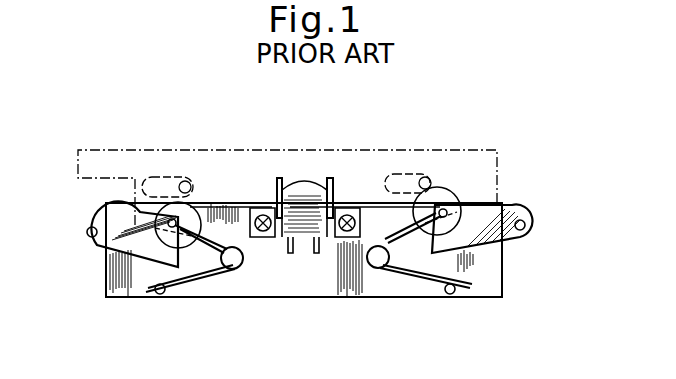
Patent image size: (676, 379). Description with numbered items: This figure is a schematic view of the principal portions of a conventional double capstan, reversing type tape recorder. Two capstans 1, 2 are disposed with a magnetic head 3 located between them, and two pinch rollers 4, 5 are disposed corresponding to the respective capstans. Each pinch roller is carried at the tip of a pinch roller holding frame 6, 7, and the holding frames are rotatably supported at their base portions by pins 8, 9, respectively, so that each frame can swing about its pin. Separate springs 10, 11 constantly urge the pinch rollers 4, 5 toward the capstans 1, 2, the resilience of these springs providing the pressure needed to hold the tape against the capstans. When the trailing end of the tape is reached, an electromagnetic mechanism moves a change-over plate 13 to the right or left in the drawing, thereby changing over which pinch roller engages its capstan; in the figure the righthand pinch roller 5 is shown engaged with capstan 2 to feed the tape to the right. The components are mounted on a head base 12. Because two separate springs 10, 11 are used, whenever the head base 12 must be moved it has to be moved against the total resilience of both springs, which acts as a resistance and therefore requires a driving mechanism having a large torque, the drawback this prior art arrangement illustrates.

The capstan 1 is at (185, 180).
The capstan 2 is at (430, 177).
The magnetic head 3 is at (293, 187).
The pinch roller 4 is at (215, 285).
The pinch roller 5 is at (435, 247).
The pinch roller holding frame 6 is at (131, 287).
The pinch roller holding frame 7 is at (477, 247).
The pin 8 is at (129, 245).
The pin 9 is at (520, 234).
The spring 10 is at (192, 288).
The spring 11 is at (400, 282).
The head base 12 is at (312, 284).
The change-over plate 13 is at (484, 150).